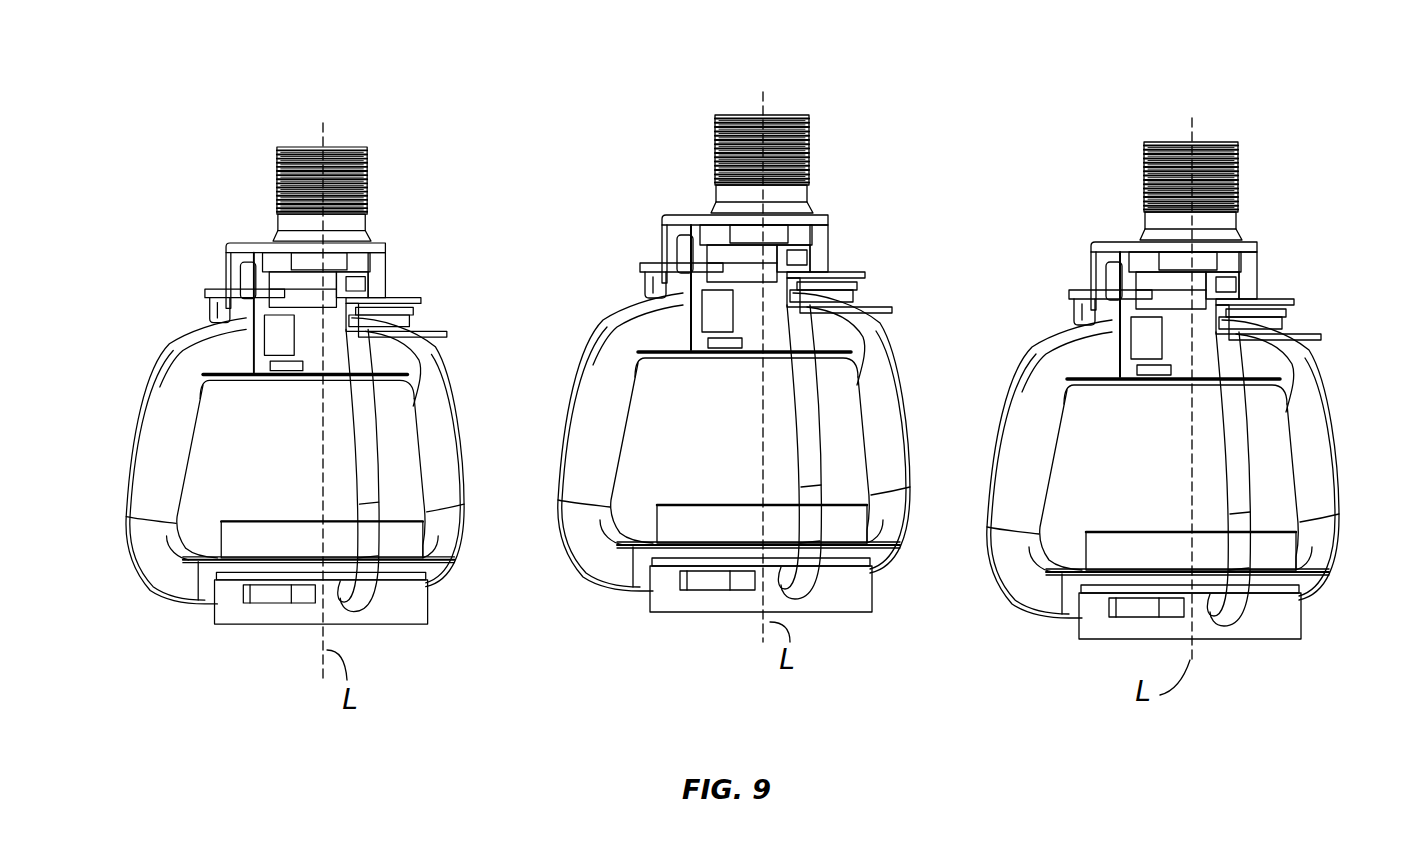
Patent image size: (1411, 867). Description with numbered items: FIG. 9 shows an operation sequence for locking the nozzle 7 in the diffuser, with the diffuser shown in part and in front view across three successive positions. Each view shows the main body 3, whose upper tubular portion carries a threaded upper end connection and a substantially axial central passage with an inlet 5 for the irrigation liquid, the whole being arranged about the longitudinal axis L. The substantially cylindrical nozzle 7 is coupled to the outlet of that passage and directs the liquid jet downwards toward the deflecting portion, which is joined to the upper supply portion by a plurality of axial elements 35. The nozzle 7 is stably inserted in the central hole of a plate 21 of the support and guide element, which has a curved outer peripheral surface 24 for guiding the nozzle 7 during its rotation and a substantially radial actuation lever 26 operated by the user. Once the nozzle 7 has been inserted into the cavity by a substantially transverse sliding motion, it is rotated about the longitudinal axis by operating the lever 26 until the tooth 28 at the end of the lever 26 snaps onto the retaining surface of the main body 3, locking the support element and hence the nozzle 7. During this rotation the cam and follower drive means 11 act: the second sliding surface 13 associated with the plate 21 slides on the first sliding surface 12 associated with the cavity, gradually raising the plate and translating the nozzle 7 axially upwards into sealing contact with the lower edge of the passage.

The inlet 5 is at (353, 142).
The main body 3 is at (363, 235).
The nozzle 7 is at (367, 272).
The cam and follower drive means 11 is at (300, 313).
The first sliding surface 12 is at (450, 333).
The second sliding surface 13 is at (300, 308).
The plate 21 is at (367, 300).
The curved outer peripheral surface 24 is at (833, 257).
The actuation lever 26 is at (217, 293).
The tooth 28 is at (1267, 317).
The axial elements 35 is at (150, 453).